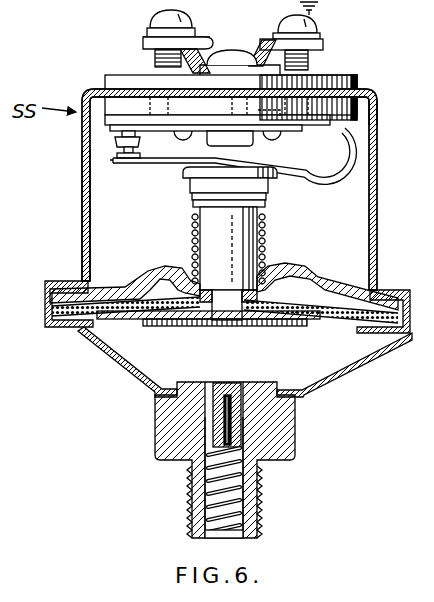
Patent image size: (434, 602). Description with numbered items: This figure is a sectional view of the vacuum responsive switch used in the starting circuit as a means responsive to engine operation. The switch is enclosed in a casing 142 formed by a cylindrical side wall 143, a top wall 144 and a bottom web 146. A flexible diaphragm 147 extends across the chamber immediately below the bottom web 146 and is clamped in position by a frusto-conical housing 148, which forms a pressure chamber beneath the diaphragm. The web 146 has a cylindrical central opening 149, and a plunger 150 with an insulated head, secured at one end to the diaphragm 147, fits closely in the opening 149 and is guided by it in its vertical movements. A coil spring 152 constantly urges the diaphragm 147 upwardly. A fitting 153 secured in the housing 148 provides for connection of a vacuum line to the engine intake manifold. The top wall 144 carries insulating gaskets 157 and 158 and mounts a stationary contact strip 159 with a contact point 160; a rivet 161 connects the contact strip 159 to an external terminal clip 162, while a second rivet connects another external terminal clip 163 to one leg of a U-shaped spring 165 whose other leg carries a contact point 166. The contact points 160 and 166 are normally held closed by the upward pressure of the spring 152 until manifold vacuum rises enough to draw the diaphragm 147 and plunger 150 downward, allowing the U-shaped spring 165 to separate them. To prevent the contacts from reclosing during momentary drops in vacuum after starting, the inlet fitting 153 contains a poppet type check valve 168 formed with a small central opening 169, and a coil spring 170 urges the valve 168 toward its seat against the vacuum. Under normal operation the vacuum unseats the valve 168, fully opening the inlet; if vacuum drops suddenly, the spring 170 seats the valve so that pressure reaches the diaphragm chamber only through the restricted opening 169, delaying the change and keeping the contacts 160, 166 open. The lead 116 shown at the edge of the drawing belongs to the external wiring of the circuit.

The lead 116 is at (2, 347).
The casing 142 is at (94, 88).
The cylindrical side wall 143 is at (82, 172).
The top wall 144 is at (143, 74).
The bottom web 146 is at (141, 262).
The flexible diaphragm 147 is at (330, 321).
The frusto-conical housing 148 is at (325, 365).
The cylindrical central opening 149 is at (280, 271).
The plunger 150 is at (200, 247).
The coil spring 152 is at (268, 228).
The fitting 153 is at (234, 409).
The insulating gasket 157 is at (357, 78).
The insulating gasket 158 is at (363, 115).
The stationary contact strip 159 is at (112, 133).
The contact point 160 is at (141, 141).
The rivet 161 is at (253, 51).
The external terminal clip 162 is at (322, 43).
The external terminal clip 163 is at (143, 37).
The U-shaped spring 165 is at (342, 177).
The contact point 166 is at (121, 158).
The poppet type check valve 168 is at (243, 427).
The central opening 169 is at (255, 386).
The coil spring 170 is at (240, 508).